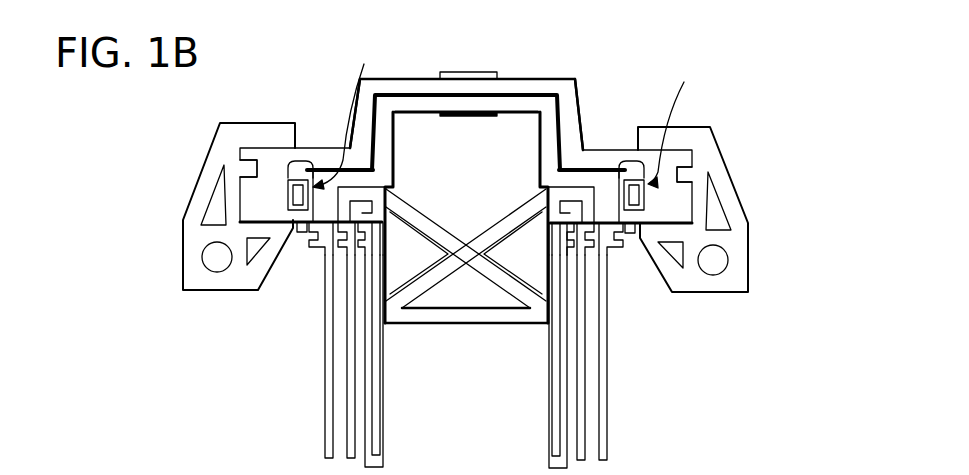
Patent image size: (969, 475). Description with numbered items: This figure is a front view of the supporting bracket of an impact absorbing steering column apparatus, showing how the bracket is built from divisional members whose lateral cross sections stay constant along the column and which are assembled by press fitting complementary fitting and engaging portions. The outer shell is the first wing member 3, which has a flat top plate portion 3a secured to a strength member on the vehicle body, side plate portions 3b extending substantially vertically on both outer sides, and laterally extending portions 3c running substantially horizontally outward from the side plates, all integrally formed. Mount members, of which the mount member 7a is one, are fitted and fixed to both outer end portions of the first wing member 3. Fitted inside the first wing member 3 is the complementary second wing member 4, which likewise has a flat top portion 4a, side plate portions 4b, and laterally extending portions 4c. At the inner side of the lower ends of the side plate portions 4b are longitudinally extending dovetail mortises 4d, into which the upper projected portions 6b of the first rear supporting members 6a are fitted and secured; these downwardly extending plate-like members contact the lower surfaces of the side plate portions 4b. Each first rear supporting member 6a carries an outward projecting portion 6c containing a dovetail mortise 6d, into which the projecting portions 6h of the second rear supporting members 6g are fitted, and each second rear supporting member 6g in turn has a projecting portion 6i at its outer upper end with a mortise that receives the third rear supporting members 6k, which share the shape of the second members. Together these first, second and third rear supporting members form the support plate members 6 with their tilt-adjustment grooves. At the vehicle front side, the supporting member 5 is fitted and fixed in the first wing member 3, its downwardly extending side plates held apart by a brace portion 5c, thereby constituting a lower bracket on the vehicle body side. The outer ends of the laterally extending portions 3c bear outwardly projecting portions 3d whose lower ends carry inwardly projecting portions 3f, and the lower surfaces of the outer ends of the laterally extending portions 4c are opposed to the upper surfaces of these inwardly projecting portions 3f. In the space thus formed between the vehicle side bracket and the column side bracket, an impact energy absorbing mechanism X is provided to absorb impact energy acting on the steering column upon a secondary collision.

The first wing member 3 is at (519, 79).
The top plate portion 3a is at (531, 90).
The side plate portions 3b is at (355, 108).
The laterally extending portions 3c is at (287, 162).
The outwardly projecting portions 3d is at (257, 203).
The inwardly projecting portions 3f is at (300, 232).
The second wing member 4 is at (453, 117).
The top portion 4a is at (506, 108).
The side plate portions 4b is at (388, 133).
The laterally extending portions 4c is at (300, 166).
The dovetail mortises 4d is at (360, 205).
The supporting member 5 is at (451, 325).
The brace portion 5c is at (423, 286).
The support plate members 6 is at (604, 372).
The first rear supporting members 6a is at (382, 440).
The upper projected portions 6b is at (542, 214).
The outward projecting portion 6c is at (537, 323).
The dovetail mortise 6d is at (558, 246).
The second rear supporting members 6g is at (351, 436).
The projecting portions 6h is at (387, 250).
The projecting portion 6i is at (592, 264).
The third rear supporting members 6k is at (327, 400).
The mount member 7a is at (265, 282).
The impact energy absorbing mechanism X is at (503, 116).